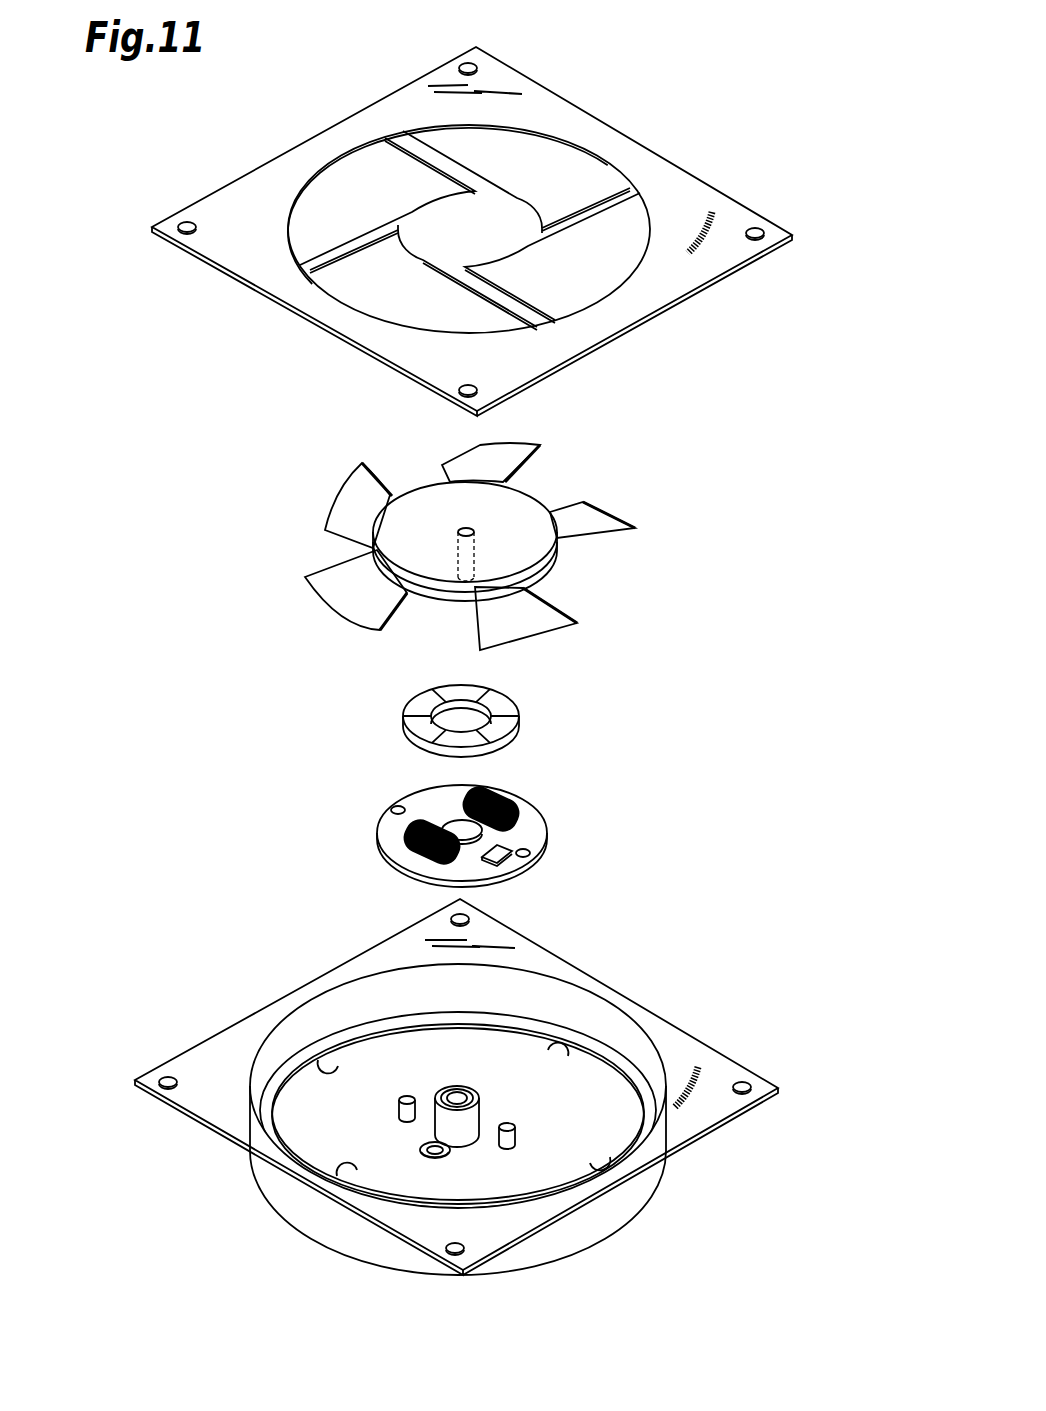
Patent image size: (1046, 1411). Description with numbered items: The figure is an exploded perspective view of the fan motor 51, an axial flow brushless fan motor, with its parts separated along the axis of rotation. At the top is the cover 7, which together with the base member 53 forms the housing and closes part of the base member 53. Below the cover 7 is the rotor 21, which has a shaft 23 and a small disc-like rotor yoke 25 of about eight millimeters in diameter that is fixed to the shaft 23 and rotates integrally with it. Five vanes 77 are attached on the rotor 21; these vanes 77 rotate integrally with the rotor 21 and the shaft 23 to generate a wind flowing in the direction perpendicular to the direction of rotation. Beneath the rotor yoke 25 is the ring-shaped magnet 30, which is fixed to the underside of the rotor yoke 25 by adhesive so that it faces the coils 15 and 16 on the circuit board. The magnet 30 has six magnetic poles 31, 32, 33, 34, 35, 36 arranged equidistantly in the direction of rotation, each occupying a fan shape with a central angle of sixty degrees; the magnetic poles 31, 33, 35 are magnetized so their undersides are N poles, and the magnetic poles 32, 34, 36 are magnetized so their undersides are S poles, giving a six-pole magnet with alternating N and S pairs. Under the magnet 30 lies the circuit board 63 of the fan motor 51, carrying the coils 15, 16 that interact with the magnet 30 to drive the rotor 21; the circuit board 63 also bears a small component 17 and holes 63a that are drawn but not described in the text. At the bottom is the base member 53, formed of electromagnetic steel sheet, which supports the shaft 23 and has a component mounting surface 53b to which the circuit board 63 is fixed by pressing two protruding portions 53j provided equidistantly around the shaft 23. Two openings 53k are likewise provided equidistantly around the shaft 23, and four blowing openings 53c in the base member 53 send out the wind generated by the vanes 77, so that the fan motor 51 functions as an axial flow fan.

The fan motor 51 is at (735, 106).
The cover 7 is at (690, 199).
The rotor 21 is at (268, 566).
The shaft 23 is at (478, 541).
The rotor yoke 25 is at (560, 576).
The vanes 77 is at (345, 500).
The magnet 30 is at (368, 722).
The magnetic pole 31 is at (505, 698).
The magnetic pole 32 is at (512, 733).
The magnetic pole 33 is at (451, 746).
The magnetic pole 34 is at (416, 730).
The magnetic pole 35 is at (420, 699).
The magnetic pole 36 is at (460, 690).
The coil 15 is at (454, 836).
The coil 16 is at (405, 836).
The hall sensor 17 is at (505, 860).
The circuit board 63 is at (546, 822).
The positioning holes 63a is at (393, 807).
The base member 53 is at (456, 1086).
The component mounting surface 53b is at (540, 1020).
The blowing openings 53c is at (328, 1060).
The protruding portions 53j is at (398, 1100).
The openings 53k is at (472, 1094).